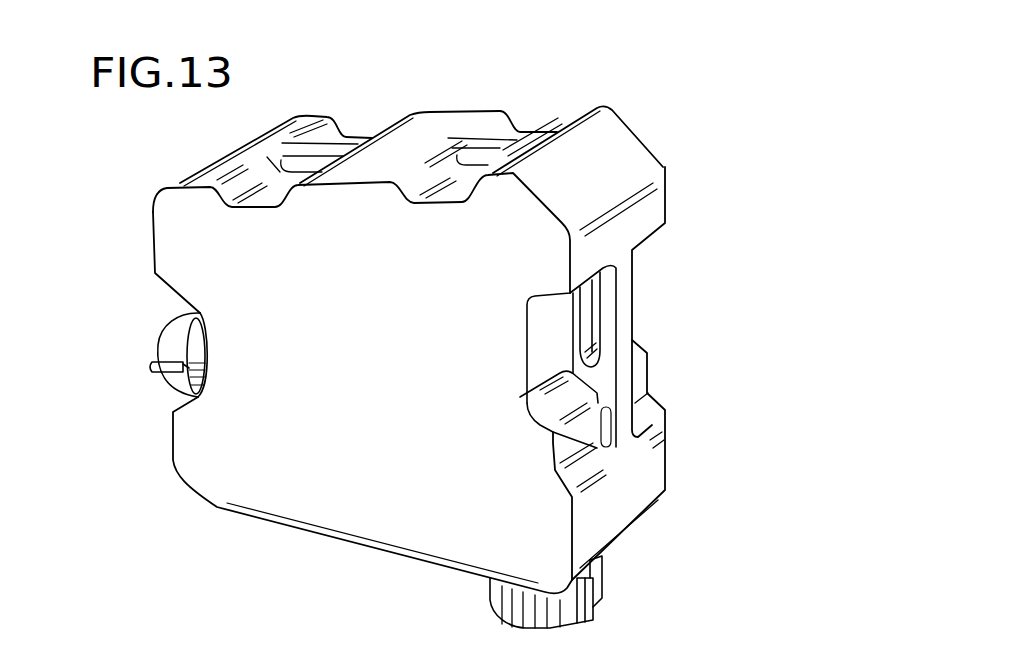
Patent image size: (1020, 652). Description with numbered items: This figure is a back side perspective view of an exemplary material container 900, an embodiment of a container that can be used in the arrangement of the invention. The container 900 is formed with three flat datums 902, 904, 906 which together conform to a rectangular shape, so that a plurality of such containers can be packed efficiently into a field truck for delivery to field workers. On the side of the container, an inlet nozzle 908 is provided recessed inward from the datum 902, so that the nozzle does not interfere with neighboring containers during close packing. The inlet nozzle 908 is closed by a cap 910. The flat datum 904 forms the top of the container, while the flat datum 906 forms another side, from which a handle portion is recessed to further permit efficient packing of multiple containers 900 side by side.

The material container 900 is at (431, 330).
The flat datum 902 is at (152, 243).
The flat datum 904 is at (412, 140).
The flat datum 906 is at (640, 212).
The inlet nozzle 908 is at (195, 348).
The cap 910 is at (156, 350).